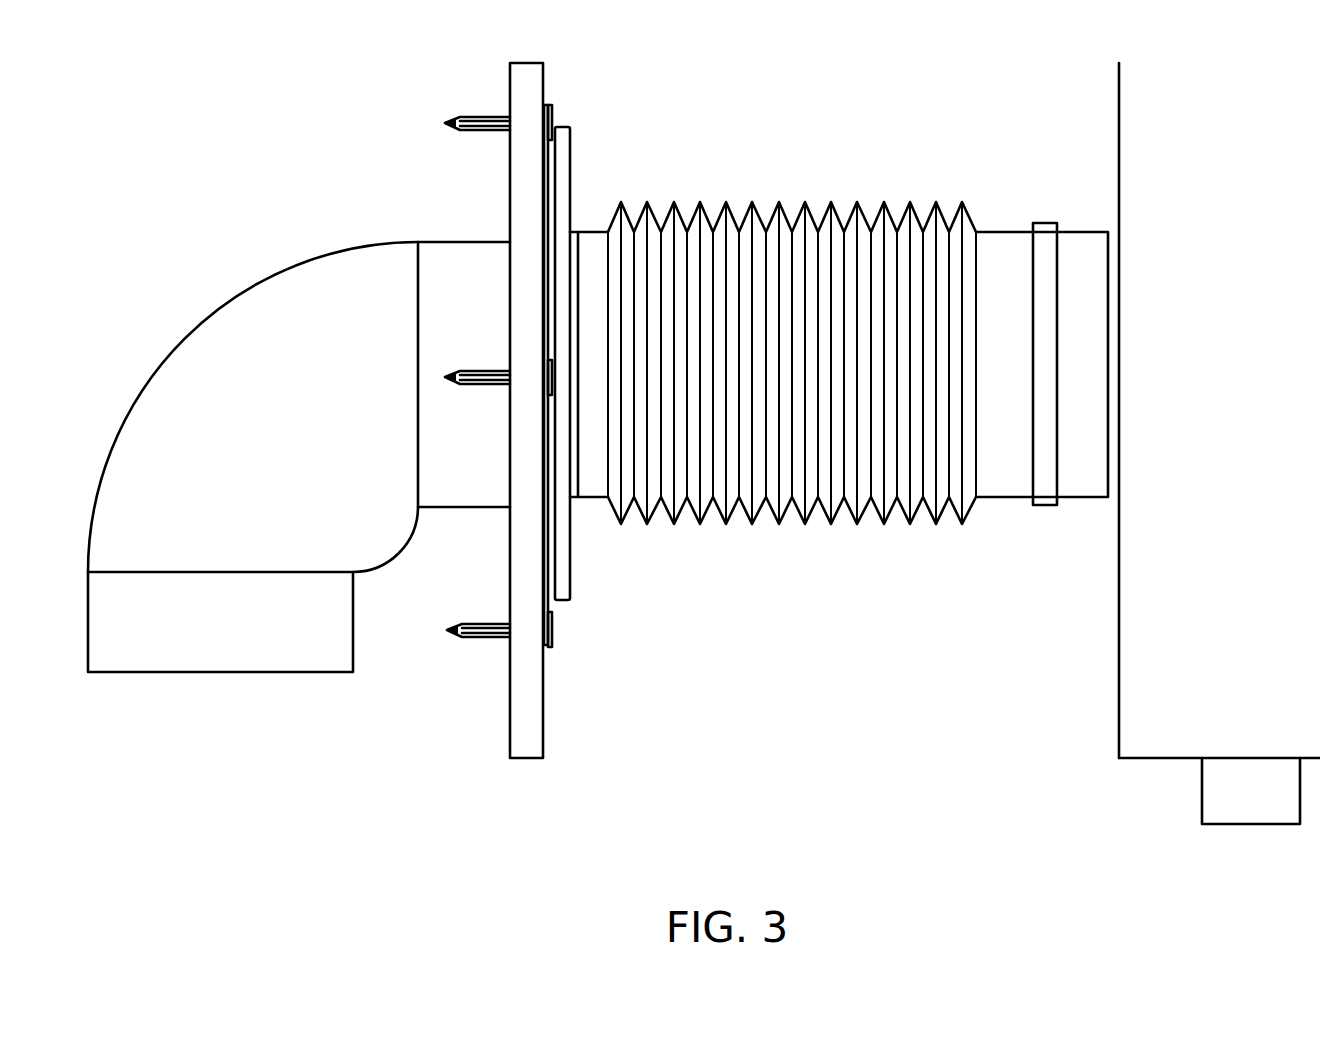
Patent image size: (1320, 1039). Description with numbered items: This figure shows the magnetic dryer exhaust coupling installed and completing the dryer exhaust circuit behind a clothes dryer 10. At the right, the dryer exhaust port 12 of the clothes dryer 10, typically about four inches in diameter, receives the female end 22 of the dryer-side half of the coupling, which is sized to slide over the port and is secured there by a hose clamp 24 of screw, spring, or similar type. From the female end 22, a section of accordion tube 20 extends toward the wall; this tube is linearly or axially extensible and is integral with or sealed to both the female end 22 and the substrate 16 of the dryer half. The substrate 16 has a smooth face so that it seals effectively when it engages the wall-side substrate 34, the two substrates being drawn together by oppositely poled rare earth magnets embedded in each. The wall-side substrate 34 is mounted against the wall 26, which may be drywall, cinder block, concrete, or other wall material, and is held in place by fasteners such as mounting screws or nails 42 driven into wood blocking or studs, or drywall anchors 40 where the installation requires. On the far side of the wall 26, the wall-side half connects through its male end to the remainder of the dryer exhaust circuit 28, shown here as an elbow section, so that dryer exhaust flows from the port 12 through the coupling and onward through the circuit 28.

The clothes dryer 10 is at (1155, 659).
The dryer exhaust port 12 is at (1116, 240).
The substrate of the dryer half of the coupling 16 is at (565, 192).
The section of accordion tube 20 is at (903, 500).
The female end 22 is at (1005, 468).
The hose clamp 24 is at (1047, 237).
The wall 26 is at (523, 732).
The remainder of the dryer exhaust circuit 28 is at (222, 378).
The substrate of the wall side of the coupling 34 is at (548, 222).
The drywall anchors 40 is at (462, 117).
The mounting screws or nails 42 is at (447, 630).